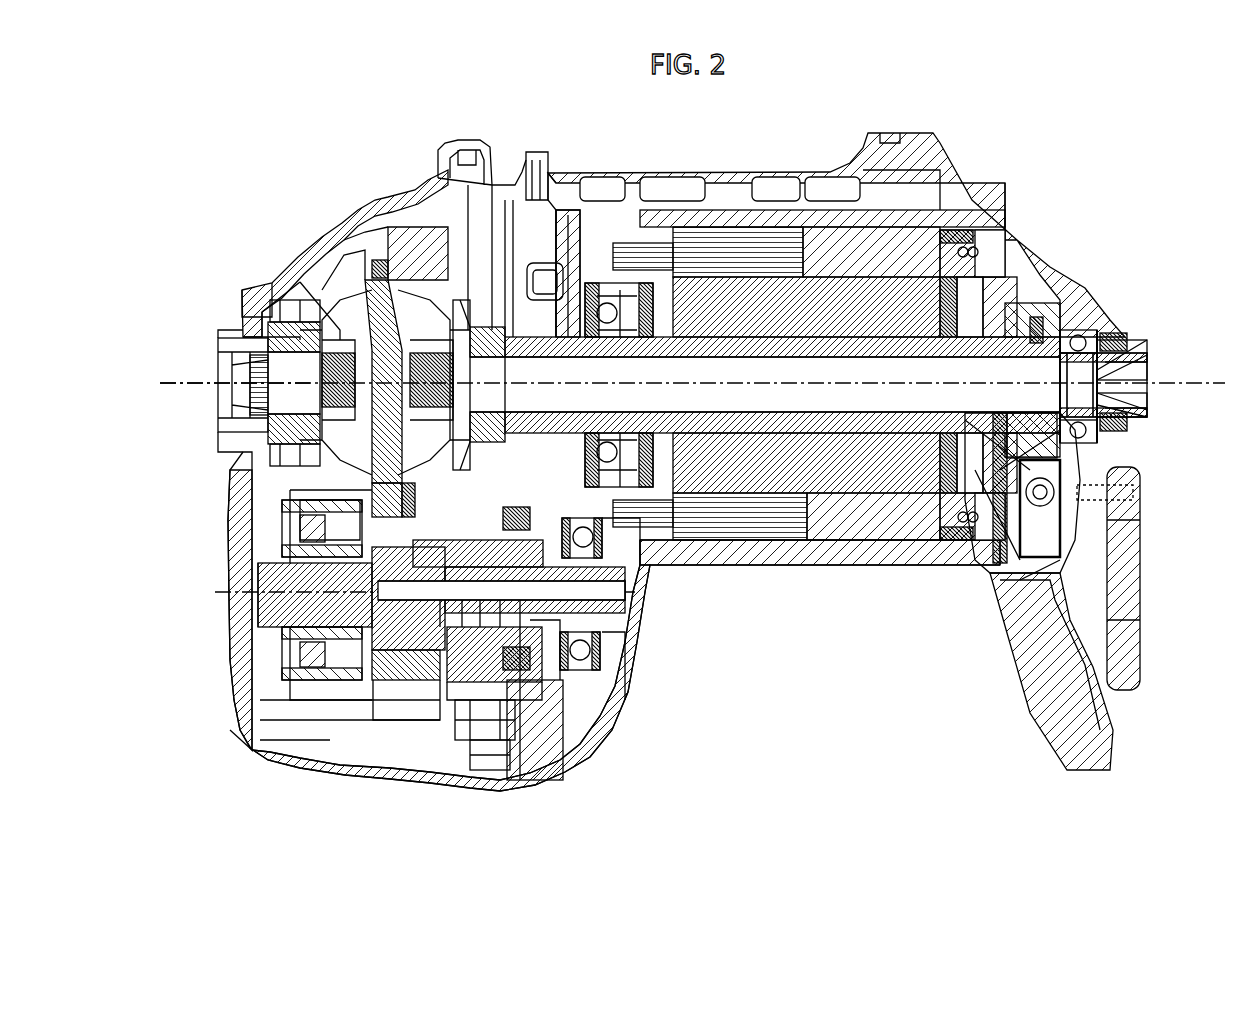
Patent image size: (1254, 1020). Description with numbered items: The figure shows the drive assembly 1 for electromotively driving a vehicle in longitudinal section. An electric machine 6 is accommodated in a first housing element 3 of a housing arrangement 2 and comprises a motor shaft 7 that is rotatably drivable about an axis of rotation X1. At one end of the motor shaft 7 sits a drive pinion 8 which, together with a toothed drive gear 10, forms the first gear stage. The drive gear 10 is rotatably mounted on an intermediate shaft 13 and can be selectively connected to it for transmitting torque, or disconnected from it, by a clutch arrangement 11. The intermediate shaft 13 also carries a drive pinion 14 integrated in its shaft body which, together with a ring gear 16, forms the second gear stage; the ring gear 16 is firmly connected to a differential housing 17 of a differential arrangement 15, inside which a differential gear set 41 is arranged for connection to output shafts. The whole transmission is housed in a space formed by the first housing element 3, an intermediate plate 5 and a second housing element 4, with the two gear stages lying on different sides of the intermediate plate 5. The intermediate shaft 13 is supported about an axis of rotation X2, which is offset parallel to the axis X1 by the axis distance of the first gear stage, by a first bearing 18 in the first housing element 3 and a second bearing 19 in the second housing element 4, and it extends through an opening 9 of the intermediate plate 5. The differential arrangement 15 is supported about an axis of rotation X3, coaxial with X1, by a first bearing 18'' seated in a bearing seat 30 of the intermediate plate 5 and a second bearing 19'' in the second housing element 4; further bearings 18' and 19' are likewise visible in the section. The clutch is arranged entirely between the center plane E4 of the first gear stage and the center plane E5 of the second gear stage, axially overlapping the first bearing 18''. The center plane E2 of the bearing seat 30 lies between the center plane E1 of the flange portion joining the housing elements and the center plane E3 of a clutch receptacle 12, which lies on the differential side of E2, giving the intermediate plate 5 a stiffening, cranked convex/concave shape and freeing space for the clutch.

The drive assembly 1 is at (1156, 232).
The housing arrangement 2 is at (566, 160).
The first housing element 3 is at (723, 190).
The second housing element 4 is at (453, 142).
The intermediate plate 5 is at (507, 772).
The electric machine 6 is at (888, 242).
The motor shaft 7 is at (776, 340).
The drive pinion 8 is at (560, 343).
The opening 9 is at (463, 670).
The drive gear 10 is at (550, 745).
The clutch arrangement 11 is at (492, 695).
The clutch receptacle 12 is at (463, 687).
The intermediate shaft 13 is at (327, 600).
The drive pinion 14 is at (393, 632).
The differential arrangement 15 is at (330, 280).
The ring gear 16 is at (403, 230).
The differential housing 17 is at (317, 327).
The first bearing 18 is at (624, 609).
The bearing 18' is at (1100, 403).
The first bearing 18'' is at (442, 276).
The second bearing 19 is at (252, 601).
The bearing 19' is at (692, 522).
The second bearing 19'' is at (229, 378).
The bearing seat 30 is at (612, 458).
The differential gear set 41 is at (300, 393).
The center plane of the flange portion E1 is at (520, 340).
The center plane of the bearing seat E2 is at (478, 343).
The center plane of the clutch receptacle E3 is at (470, 690).
The center plane of the first gear stage E4 is at (540, 700).
The center plane of the second gear stage E5 is at (433, 657).
The axis of rotation X1 is at (692, 364).
The axis of rotation X2 is at (404, 573).
The axis of rotation X3 is at (213, 384).